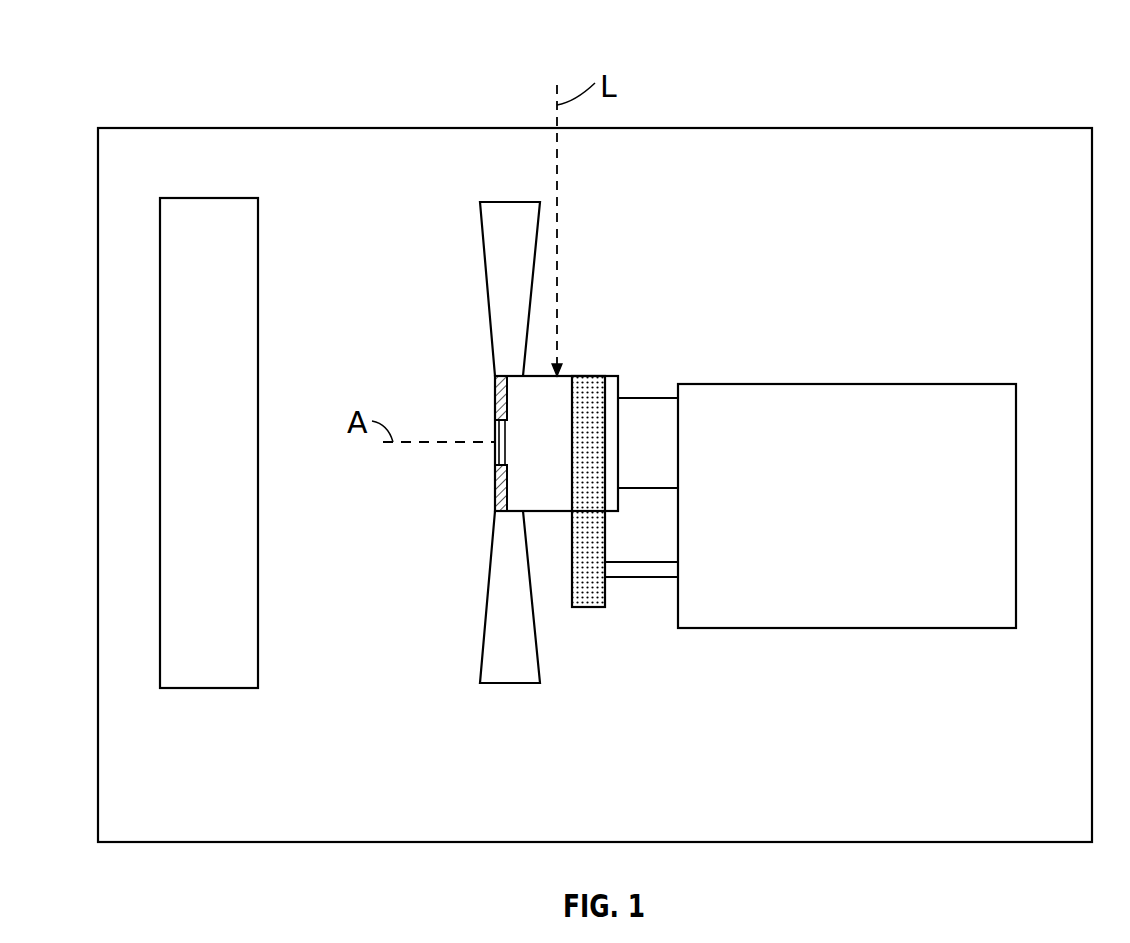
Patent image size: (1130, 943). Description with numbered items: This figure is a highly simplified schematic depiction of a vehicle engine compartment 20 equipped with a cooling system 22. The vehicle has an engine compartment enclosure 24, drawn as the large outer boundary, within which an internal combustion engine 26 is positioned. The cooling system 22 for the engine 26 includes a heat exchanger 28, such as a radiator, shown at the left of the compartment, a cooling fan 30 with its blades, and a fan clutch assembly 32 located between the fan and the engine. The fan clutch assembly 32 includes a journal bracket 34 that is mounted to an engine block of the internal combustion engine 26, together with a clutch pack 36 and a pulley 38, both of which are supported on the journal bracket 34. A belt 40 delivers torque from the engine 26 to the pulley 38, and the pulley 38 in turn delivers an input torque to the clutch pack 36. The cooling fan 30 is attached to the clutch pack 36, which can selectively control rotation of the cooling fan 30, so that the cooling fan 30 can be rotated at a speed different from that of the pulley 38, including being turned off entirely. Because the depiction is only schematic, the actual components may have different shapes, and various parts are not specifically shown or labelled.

The vehicle engine compartment 20 is at (836, 818).
The cooling system 22 is at (160, 78).
The engine compartment enclosure 24 is at (1052, 128).
The internal combustion engine 26 is at (975, 384).
The heat exchanger 28 is at (208, 198).
The cooling fan 30 is at (483, 597).
The fan clutch assembly 32 is at (678, 662).
The journal bracket 34 is at (648, 398).
The clutch pack 36 is at (497, 433).
The pulley 38 is at (612, 376).
The belt 40 is at (587, 376).